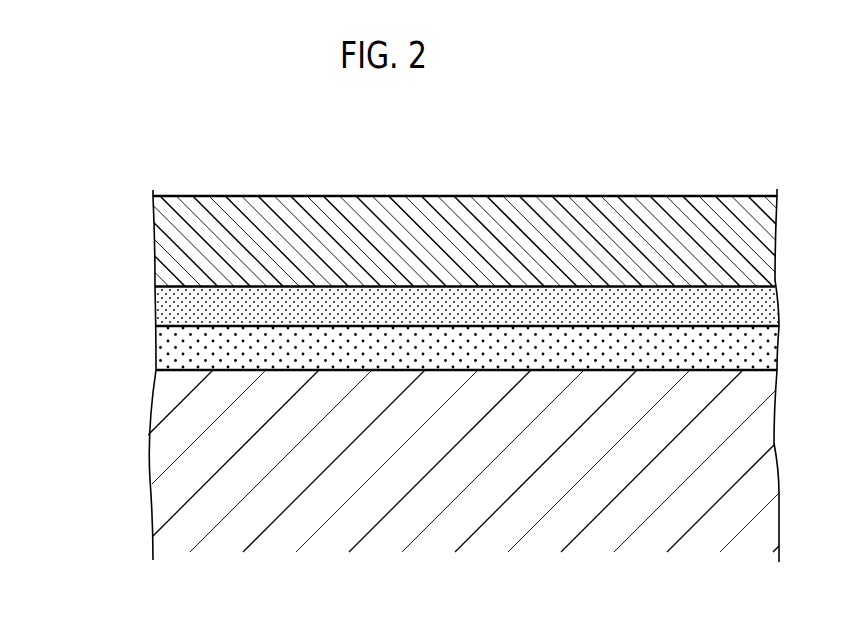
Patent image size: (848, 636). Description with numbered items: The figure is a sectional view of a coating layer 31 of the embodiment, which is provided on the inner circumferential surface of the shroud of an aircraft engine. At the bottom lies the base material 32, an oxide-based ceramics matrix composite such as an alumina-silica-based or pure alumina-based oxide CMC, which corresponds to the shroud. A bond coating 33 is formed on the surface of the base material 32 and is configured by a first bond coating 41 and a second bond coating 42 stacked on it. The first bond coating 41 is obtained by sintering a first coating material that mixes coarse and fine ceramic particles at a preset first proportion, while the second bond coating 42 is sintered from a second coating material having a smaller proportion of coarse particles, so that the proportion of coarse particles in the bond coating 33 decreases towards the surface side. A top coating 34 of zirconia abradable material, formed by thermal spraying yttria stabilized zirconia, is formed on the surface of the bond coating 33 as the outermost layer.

The coating layer 31 is at (218, 173).
The base material 32 is at (207, 495).
The bond coating 33 is at (70, 293).
The top coating 34 is at (170, 233).
The first bond coating 41 is at (170, 352).
The second bond coating 42 is at (170, 306).